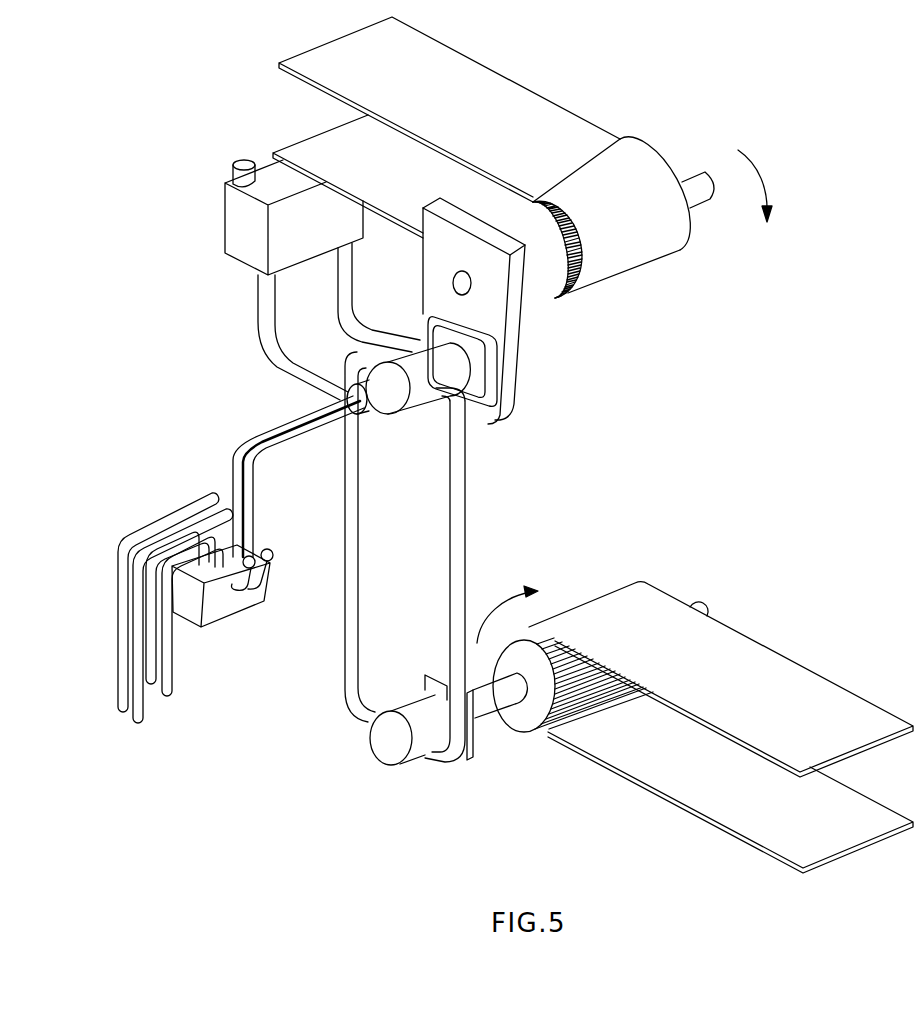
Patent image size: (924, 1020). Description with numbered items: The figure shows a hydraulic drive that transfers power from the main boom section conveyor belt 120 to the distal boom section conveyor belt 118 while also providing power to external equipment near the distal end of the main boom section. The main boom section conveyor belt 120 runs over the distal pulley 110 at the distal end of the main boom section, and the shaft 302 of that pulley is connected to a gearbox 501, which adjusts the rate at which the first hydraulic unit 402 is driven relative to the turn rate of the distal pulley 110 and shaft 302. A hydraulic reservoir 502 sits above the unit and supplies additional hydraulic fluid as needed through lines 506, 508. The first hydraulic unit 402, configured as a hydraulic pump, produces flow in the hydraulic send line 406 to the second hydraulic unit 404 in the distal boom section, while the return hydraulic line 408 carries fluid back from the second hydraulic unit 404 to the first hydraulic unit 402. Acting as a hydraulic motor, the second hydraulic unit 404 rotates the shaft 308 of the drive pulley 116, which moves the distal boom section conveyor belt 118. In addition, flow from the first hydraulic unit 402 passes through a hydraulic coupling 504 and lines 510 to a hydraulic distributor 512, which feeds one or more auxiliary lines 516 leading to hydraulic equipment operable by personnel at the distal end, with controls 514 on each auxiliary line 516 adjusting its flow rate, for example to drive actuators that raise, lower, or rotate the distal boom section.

The main boom section conveyor belt 120 is at (540, 80).
The shaft 302 is at (717, 182).
The distal pulley 110 is at (545, 282).
The gearbox 501 is at (505, 392).
The first hydraulic unit 402 is at (430, 384).
The hydraulic coupling 504 is at (356, 381).
The line 506 is at (257, 303).
The line 508 is at (353, 286).
The hydraulic reservoir 502 is at (223, 215).
The lines 510 is at (253, 432).
The controls 514 is at (264, 552).
The hydraulic distributor 512 is at (222, 625).
The auxiliary lines 516 is at (118, 628).
The return hydraulic line 408 is at (345, 598).
The hydraulic send line 406 is at (465, 548).
The second hydraulic unit 404 is at (393, 766).
The drive pulley 116 is at (537, 708).
The shaft 308 is at (695, 601).
The distal boom section conveyor belt 118 is at (802, 703).